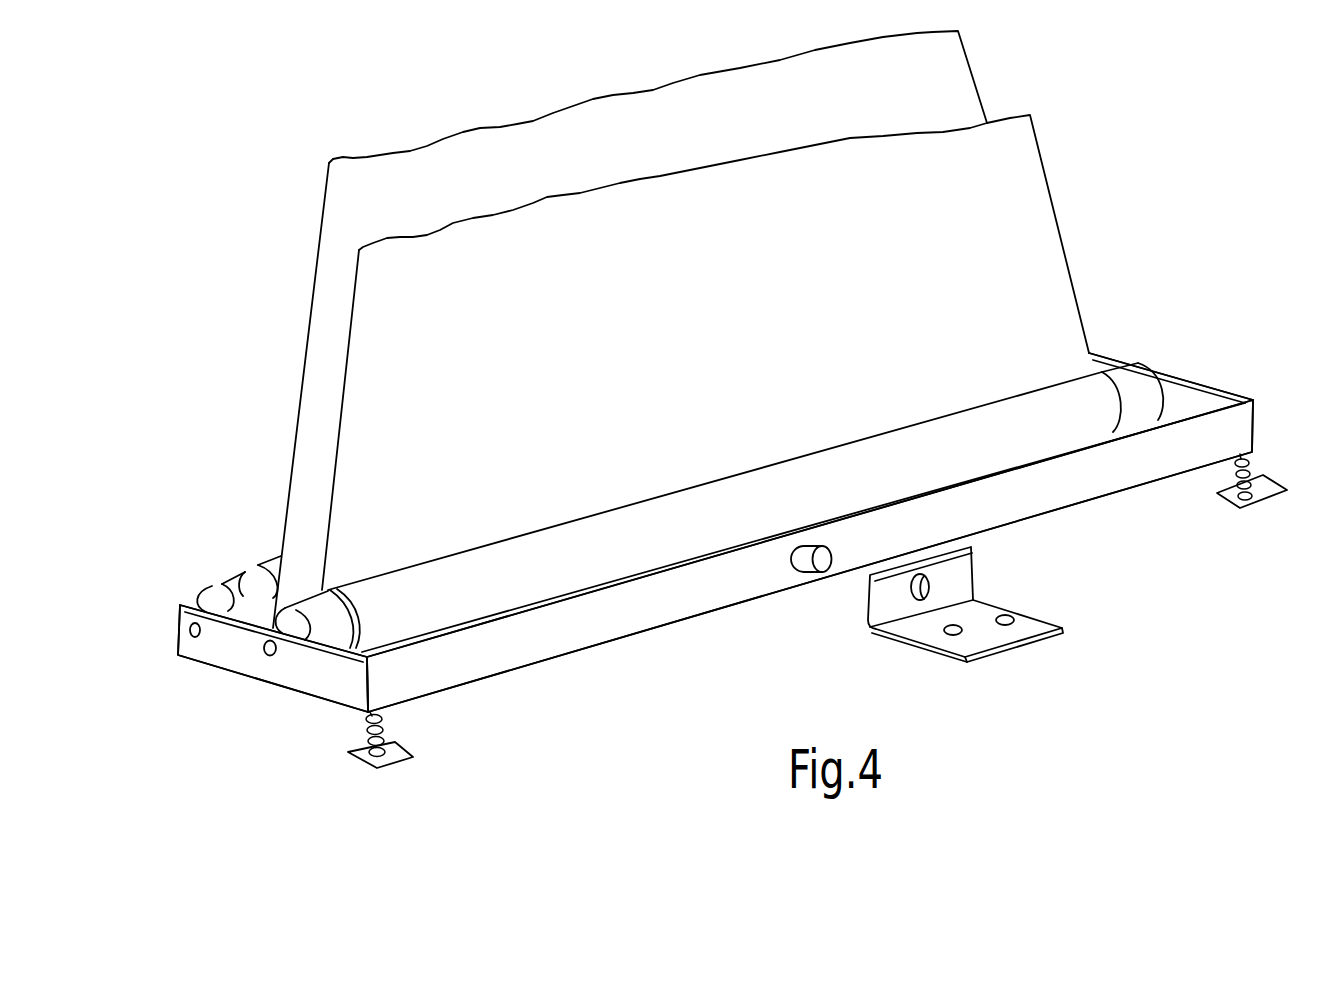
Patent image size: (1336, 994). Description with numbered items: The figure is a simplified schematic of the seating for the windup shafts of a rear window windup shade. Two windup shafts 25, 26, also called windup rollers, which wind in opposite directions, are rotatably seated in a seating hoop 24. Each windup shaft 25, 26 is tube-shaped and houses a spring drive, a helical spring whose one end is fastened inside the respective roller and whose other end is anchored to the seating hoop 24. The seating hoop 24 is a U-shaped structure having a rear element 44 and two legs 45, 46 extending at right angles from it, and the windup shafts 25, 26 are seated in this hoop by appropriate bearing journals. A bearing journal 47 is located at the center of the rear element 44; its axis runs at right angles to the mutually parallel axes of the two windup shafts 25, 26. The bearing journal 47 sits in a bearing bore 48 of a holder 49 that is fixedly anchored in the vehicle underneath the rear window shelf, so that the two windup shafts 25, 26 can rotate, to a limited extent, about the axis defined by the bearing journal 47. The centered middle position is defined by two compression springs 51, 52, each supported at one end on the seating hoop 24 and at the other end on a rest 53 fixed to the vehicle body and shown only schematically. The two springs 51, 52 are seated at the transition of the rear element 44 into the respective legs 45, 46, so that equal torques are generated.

The seating hoop 24 is at (512, 672).
The windup shaft 25 is at (315, 617).
The windup shaft 26 is at (233, 587).
The rear element 44 is at (693, 597).
The leg 45 is at (1176, 399).
The leg 46 is at (227, 660).
The bearing journal 47 is at (805, 563).
The bearing bore 48 is at (927, 588).
The holder 49 is at (1005, 643).
The compression spring 51 is at (390, 743).
The compression spring 52 is at (1248, 467).
The rest 53 is at (358, 753).